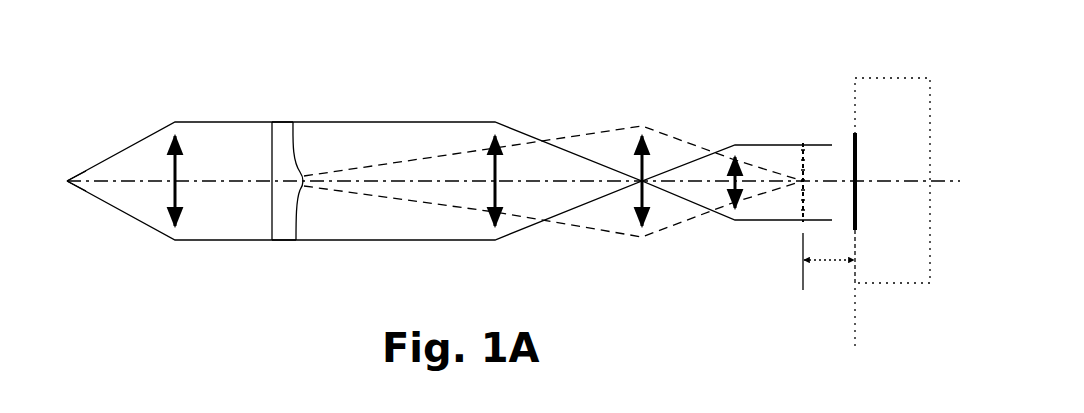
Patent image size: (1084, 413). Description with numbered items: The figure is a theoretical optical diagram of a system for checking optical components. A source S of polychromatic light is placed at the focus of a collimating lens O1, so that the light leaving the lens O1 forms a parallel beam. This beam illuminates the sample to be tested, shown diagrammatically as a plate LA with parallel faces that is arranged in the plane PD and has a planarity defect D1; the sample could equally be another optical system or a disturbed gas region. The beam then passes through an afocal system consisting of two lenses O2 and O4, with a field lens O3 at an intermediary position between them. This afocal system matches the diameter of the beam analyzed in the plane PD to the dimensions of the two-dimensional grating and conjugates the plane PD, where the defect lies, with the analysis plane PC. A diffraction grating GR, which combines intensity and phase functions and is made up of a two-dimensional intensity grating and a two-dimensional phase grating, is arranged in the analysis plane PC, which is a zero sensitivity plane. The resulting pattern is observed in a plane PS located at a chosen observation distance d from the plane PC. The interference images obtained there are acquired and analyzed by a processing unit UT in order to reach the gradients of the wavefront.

The source of polychromatic light S is at (71, 197).
The collimating lens O1 is at (170, 162).
The plate with parallel faces LA is at (288, 122).
The planarity defect D1 is at (298, 192).
The plane of the sample PD is at (283, 285).
The first lens of the afocal system O2 is at (489, 150).
The field lens O3 is at (637, 157).
The second lens of the afocal system O4 is at (731, 163).
The diffraction grating GR is at (802, 121).
The processing unit UT is at (908, 70).
The observation distance d is at (828, 265).
The analysis plane PC is at (779, 328).
The observation plane PS is at (837, 241).